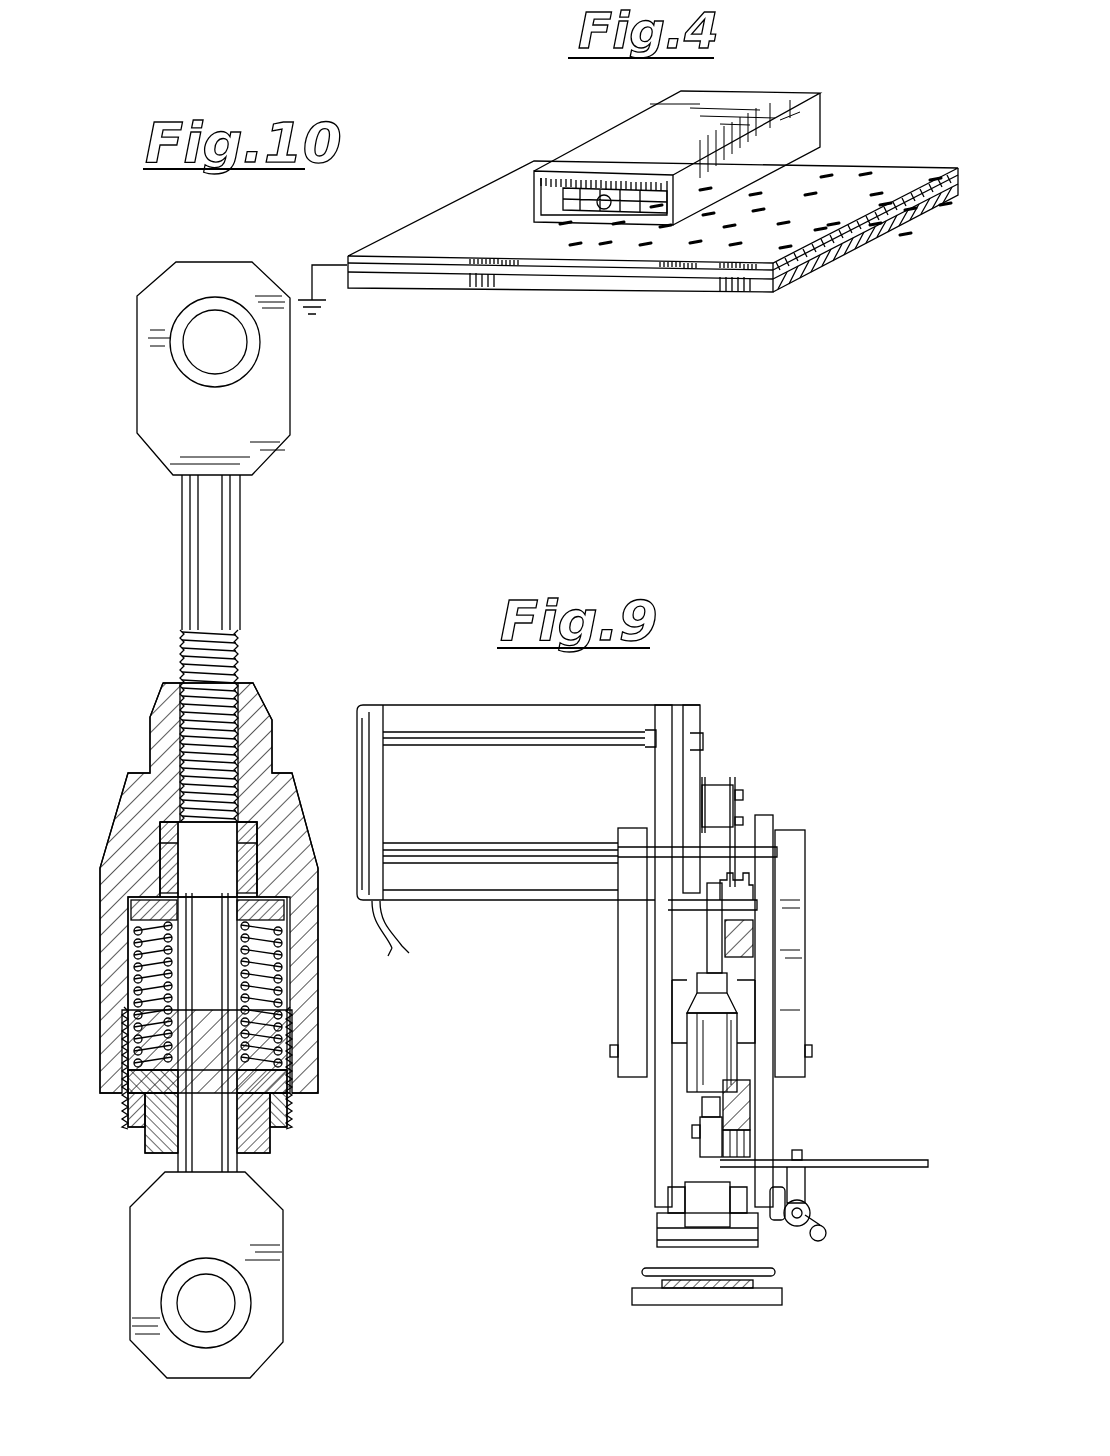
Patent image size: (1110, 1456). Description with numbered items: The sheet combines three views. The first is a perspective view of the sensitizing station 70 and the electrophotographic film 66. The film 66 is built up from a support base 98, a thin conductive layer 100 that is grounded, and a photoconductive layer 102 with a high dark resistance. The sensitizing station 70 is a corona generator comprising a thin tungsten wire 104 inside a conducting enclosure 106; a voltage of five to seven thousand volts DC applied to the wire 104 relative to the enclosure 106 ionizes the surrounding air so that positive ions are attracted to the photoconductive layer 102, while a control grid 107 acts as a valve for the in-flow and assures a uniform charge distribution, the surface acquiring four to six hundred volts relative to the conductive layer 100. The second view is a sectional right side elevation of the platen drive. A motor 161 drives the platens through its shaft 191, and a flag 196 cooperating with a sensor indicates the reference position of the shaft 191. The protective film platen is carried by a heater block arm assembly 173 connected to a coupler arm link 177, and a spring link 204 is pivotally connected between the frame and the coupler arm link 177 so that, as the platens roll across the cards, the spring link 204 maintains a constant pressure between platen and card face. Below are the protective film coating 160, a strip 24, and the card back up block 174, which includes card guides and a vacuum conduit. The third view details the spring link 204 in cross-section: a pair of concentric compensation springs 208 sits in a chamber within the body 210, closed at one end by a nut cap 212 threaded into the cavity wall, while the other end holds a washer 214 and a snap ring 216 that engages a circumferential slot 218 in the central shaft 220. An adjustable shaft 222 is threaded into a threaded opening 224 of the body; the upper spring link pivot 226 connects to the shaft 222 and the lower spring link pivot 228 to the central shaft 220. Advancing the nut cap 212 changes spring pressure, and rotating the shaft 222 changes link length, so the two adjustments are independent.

In FIG. 9, the test strip 24 is at (752, 1284).
In FIG. 4, the electrophotographic film 66 is at (893, 160).
In FIG. 4, the sensitizing station 70 is at (720, 195).
In FIG. 4, the support base 98 is at (769, 291).
In FIG. 4, the thin conductive layer 100 is at (737, 274).
In FIG. 4, the photoconductive layer 102 is at (686, 268).
In FIG. 4, the thin tungsten wire 104 is at (605, 196).
In FIG. 4, the conducting enclosure 106 is at (627, 130).
In FIG. 4, the control grid 107 is at (589, 213).
In FIG. 9, the protective film coating 160 is at (748, 1270).
In FIG. 9, the motor 161 is at (540, 817).
In FIG. 9, the heater block arm assembly 173 is at (768, 1138).
In FIG. 9, the card back up block 174 is at (735, 1300).
In FIG. 9, the coupler arm link 177 is at (806, 969).
In FIG. 9, the shaft of motor 191 is at (718, 785).
In FIG. 9, the flag 196 is at (750, 872).
In FIG. 10, the spring link 204 is at (175, 938).
In FIG. 9, the spring link 204 is at (687, 1080).
In FIG. 10, the compensation springs 208 is at (183, 965).
In FIG. 10, the body 210 is at (100, 1078).
In FIG. 10, the nut cap 212 is at (149, 1138).
In FIG. 10, the washer 214 is at (130, 912).
In FIG. 10, the snap ring 216 is at (130, 899).
In FIG. 10, the circumferential slot 218 is at (200, 888).
In FIG. 10, the central shaft 220 is at (150, 975).
In FIG. 10, the adjustable shaft 222 is at (242, 597).
In FIG. 10, the threaded opening 224 is at (242, 717).
In FIG. 10, the upper spring link pivot 226 is at (312, 337).
In FIG. 10, the lower spring link pivot 228 is at (126, 1282).